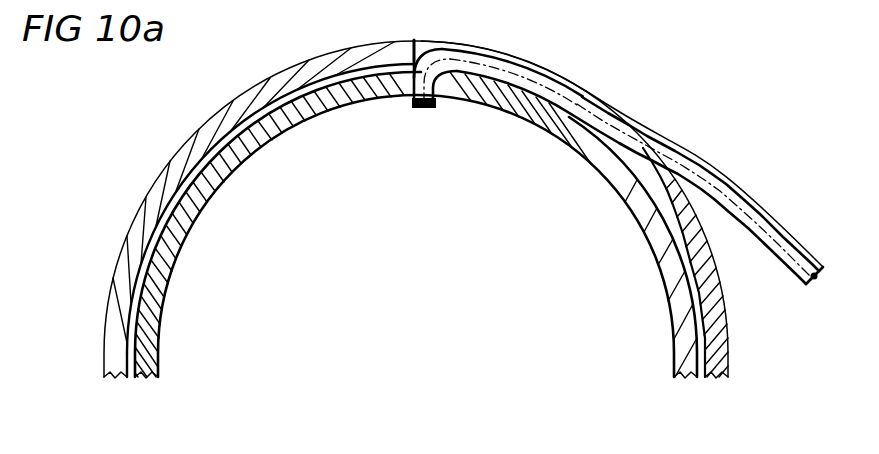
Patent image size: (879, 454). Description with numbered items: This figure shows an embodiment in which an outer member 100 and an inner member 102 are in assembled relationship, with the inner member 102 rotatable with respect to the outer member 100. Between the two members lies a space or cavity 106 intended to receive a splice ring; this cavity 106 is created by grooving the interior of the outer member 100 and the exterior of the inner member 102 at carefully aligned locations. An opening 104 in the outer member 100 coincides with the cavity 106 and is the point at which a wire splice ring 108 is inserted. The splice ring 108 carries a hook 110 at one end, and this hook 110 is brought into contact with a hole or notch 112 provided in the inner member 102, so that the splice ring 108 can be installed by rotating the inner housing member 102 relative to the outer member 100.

The outer member 100 is at (128, 232).
The inner member 102 is at (143, 374).
The opening 104 is at (462, 45).
The space or cavity 106 is at (258, 113).
The wire splice ring 108 is at (704, 155).
The hook 110 is at (418, 105).
The hole or notch 112 is at (461, 99).